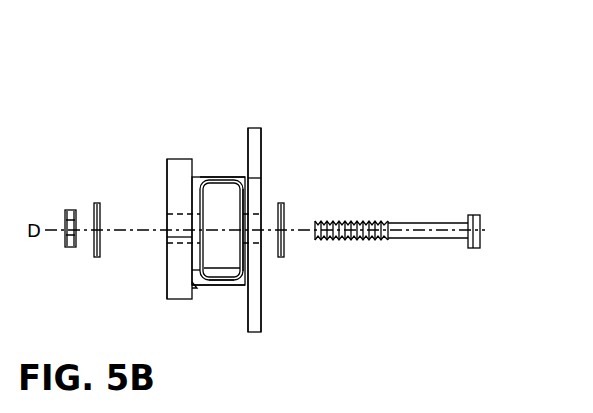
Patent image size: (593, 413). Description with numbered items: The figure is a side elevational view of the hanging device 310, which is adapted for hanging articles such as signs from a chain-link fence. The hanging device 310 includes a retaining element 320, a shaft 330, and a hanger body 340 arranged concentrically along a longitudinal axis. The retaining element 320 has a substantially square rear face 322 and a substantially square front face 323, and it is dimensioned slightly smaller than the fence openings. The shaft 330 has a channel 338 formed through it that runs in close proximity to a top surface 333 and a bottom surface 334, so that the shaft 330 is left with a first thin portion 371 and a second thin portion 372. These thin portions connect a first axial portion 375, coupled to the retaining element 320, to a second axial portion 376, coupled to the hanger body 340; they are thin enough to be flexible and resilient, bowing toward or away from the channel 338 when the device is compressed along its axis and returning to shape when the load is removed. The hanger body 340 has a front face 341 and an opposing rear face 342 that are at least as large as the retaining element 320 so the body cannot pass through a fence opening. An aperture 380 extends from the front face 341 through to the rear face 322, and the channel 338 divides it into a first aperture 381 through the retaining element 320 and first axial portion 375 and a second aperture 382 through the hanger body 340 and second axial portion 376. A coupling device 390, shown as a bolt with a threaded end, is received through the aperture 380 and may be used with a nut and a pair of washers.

The hanging device 310 is at (404, 102).
The retaining element 320 is at (166, 158).
The rear face 322 is at (167, 177).
The front face 323 is at (192, 284).
The shaft 330 is at (204, 175).
The top surface 333 is at (235, 177).
The bottom surface 334 is at (238, 285).
The channel 338 is at (222, 258).
The hanger body 340 is at (264, 126).
The front face 341 is at (261, 308).
The rear face 342 is at (244, 135).
The first thin portion 371 is at (223, 177).
The second thin portion 372 is at (204, 285).
The first axial portion 375 is at (197, 273).
The second axial portion 376 is at (262, 178).
The aperture 380 is at (166, 215).
The first aperture 381 is at (172, 237).
The second aperture 382 is at (253, 223).
The coupling device 390 is at (411, 221).